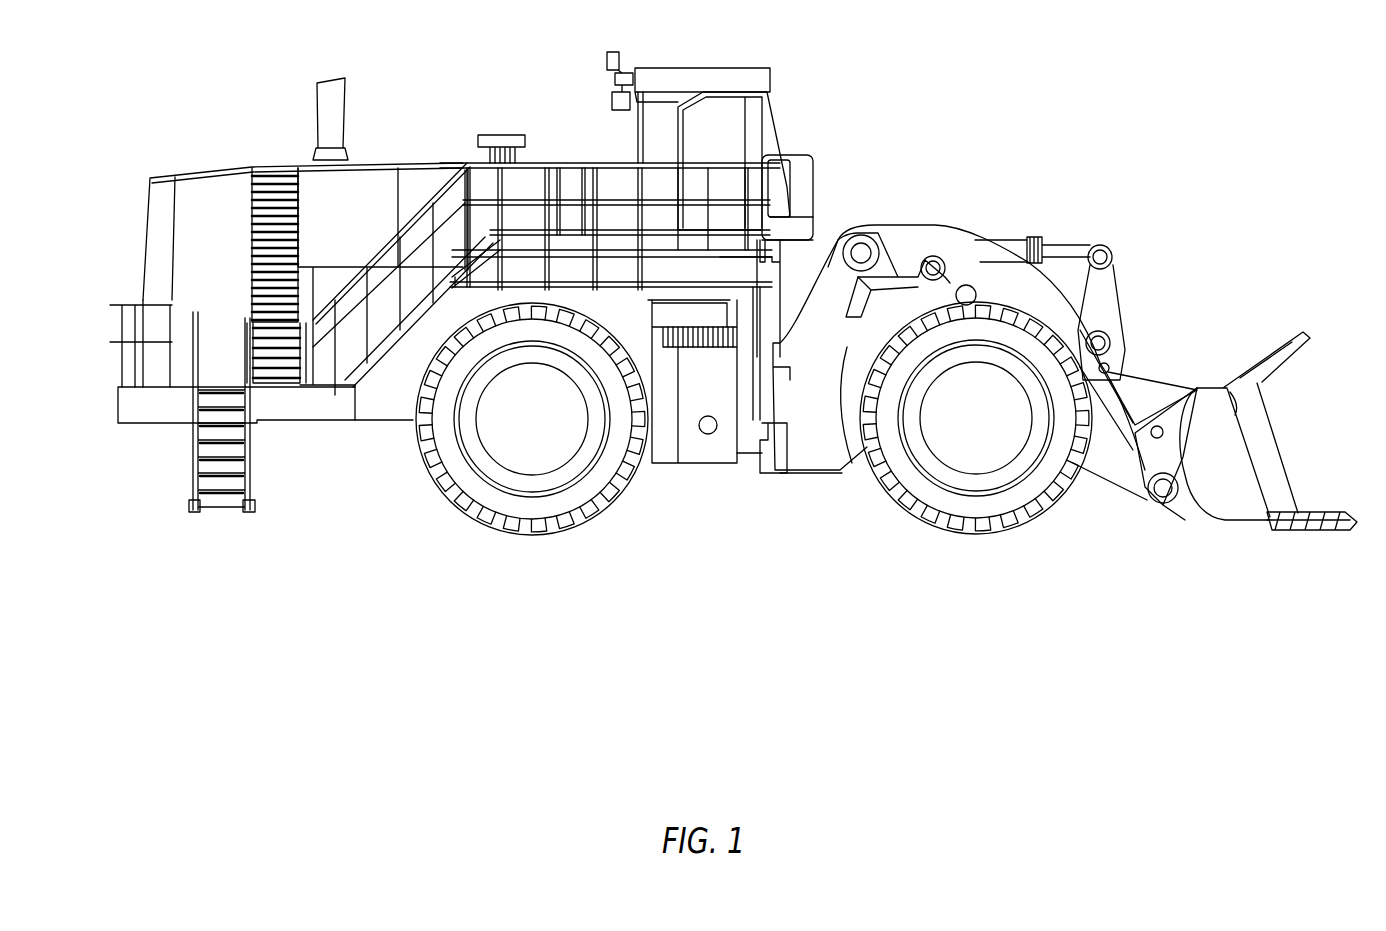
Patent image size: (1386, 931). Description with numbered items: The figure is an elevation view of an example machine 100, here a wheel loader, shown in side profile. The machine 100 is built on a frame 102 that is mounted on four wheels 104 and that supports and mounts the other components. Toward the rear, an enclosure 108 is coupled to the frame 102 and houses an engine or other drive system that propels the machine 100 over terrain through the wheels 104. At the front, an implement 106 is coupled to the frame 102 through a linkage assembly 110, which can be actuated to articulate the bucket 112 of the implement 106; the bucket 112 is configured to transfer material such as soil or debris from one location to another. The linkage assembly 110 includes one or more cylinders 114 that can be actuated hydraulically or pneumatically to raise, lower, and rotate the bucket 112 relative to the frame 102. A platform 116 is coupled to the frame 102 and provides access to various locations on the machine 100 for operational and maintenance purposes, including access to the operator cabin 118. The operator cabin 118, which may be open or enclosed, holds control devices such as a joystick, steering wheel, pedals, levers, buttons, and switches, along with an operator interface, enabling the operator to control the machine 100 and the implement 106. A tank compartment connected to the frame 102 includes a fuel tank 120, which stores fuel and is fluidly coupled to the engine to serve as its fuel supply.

The machine 100 is at (514, 40).
The frame 102 is at (167, 413).
The wheels 104 is at (487, 527).
The implement 106 is at (1104, 206).
The enclosure 108 is at (218, 167).
The linkage assembly 110 is at (1105, 318).
The bucket 112 is at (1250, 497).
The cylinders 114 is at (1013, 245).
The platform 116 is at (612, 252).
The operator cabin 118 is at (757, 79).
The fuel tank 120 is at (710, 452).